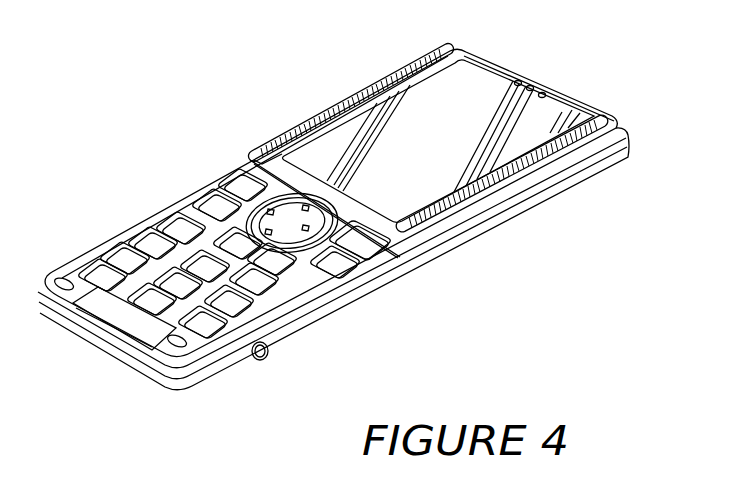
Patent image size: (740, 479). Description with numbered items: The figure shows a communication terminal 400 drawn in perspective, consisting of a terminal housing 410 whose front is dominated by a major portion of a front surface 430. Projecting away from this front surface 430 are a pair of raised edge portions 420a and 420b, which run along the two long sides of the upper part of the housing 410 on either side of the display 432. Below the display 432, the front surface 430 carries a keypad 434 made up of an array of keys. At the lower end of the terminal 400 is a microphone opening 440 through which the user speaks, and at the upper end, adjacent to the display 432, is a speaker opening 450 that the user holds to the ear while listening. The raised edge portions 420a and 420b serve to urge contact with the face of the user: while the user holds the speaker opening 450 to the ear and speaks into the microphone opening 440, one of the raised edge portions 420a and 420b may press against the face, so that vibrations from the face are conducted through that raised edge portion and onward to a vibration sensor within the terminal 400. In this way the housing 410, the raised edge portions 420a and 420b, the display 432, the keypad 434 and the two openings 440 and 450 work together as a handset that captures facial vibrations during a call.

The terminal 400 is at (150, 66).
The terminal housing 410 is at (501, 50).
The raised edge portion 420a is at (520, 170).
The raised edge portion 420b is at (353, 100).
The front surface 430 is at (377, 213).
The display 432 is at (570, 112).
The keypad 434 is at (170, 220).
The microphone opening 440 is at (186, 350).
The speaker opening 450 is at (533, 86).